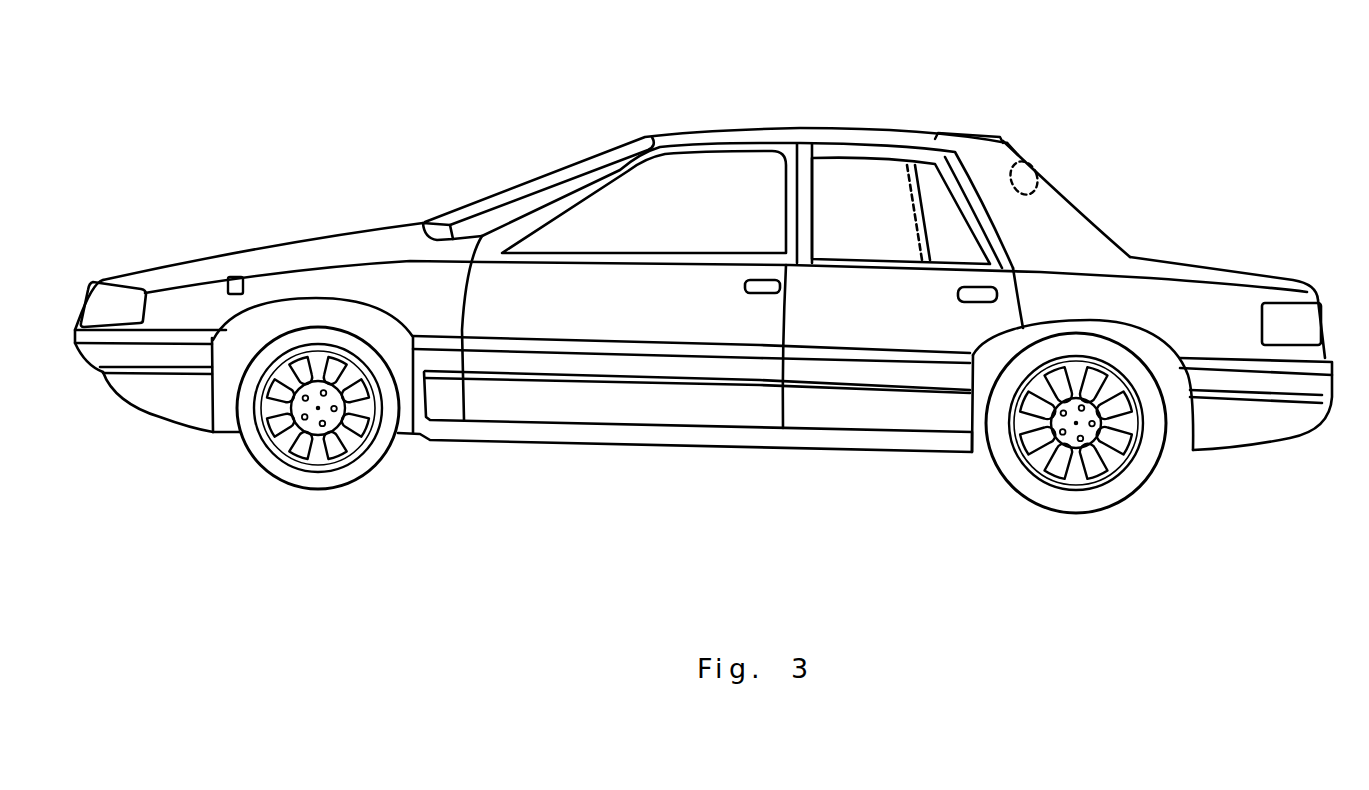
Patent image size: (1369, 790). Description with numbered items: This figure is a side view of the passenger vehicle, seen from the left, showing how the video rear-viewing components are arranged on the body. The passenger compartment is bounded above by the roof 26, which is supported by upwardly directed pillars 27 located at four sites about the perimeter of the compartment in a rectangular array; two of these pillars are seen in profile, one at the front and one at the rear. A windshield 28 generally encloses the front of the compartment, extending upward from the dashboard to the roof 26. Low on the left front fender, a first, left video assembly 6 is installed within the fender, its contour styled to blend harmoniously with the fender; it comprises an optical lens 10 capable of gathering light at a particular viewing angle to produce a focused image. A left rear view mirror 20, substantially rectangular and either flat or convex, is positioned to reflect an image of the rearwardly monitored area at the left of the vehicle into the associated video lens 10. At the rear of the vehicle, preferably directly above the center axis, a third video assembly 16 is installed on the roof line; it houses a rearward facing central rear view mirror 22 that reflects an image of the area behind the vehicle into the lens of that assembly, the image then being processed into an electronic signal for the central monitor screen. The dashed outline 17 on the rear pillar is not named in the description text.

The left video assembly 6 is at (222, 287).
The optical lens 10 is at (243, 287).
The third video assembly 16 is at (997, 137).
The rear sensor location 17 is at (1012, 165).
The left rear view mirror 20 is at (200, 288).
The central rear view mirror 22 is at (1014, 152).
The roof 26 is at (753, 137).
The pillars 27 is at (560, 207).
The windshield 28 is at (500, 210).